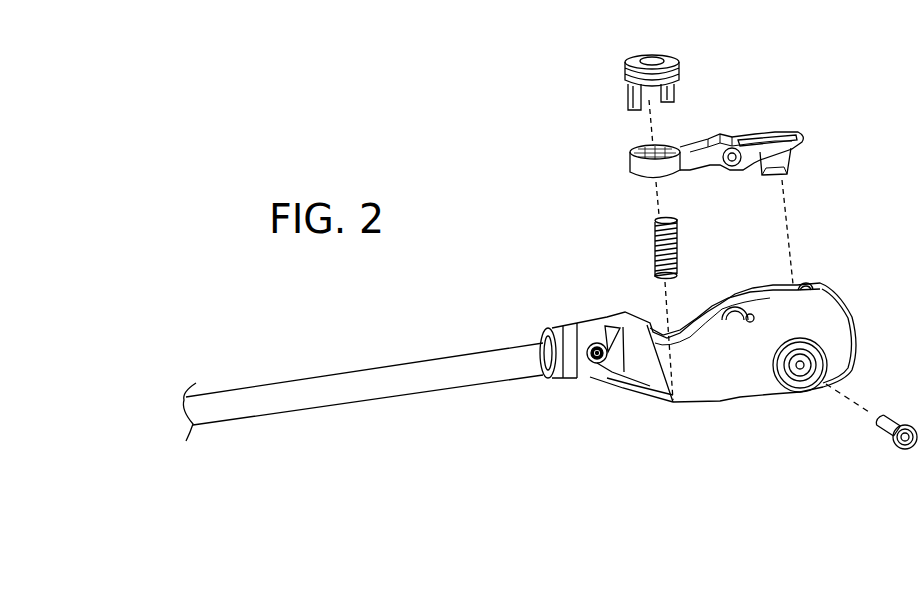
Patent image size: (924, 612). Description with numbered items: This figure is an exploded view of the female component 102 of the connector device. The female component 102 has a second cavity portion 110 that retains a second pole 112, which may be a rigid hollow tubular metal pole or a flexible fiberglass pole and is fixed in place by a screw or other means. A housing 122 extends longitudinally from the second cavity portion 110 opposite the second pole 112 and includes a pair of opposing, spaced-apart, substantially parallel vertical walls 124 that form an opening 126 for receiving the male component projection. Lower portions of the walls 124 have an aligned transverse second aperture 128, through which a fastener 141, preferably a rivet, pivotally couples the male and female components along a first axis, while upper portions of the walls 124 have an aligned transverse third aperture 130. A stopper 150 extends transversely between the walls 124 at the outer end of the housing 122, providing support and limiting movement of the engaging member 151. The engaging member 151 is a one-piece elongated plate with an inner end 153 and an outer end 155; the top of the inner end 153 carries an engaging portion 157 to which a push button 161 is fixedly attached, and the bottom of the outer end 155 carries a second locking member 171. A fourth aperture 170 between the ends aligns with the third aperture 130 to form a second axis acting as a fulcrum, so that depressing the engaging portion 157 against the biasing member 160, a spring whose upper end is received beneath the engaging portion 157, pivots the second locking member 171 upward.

The female component 102 is at (587, 402).
The second cavity portion 110 is at (567, 366).
The second pole 112 is at (332, 378).
The housing 122 is at (697, 379).
The walls 124 is at (820, 323).
The opening 126 is at (643, 311).
The second aperture 128 is at (799, 370).
The third aperture 130 is at (751, 314).
The fastener 141 is at (887, 443).
The stopper 150 is at (806, 288).
The engaging member 151 is at (615, 127).
The inner end 153 is at (647, 173).
The outer end 155 is at (777, 133).
The engaging portion 157 is at (632, 158).
The biasing member 160 is at (653, 238).
The push button 161 is at (647, 60).
The fourth aperture 170 is at (733, 148).
The second locking member 171 is at (788, 166).